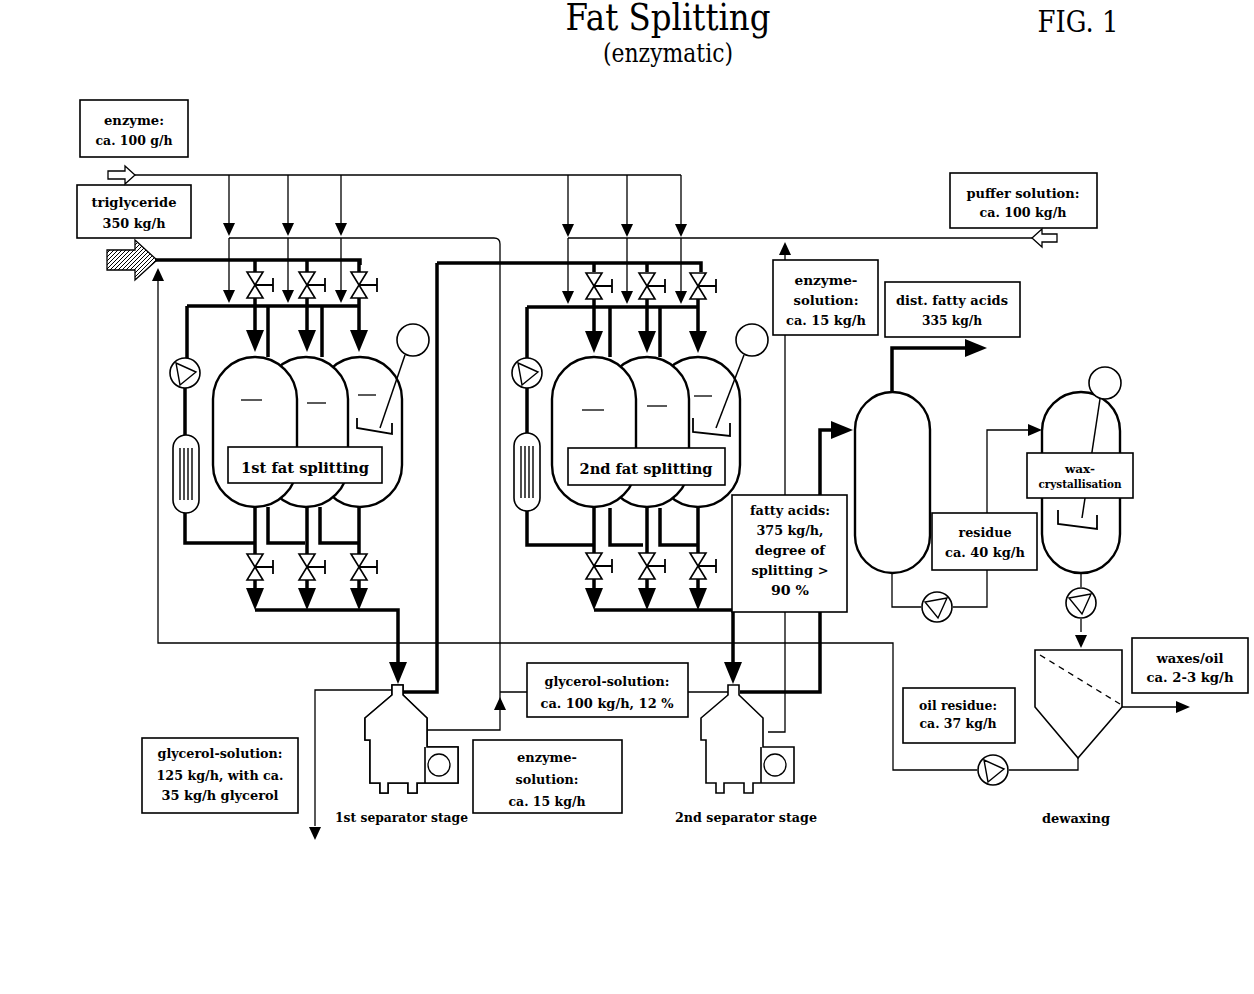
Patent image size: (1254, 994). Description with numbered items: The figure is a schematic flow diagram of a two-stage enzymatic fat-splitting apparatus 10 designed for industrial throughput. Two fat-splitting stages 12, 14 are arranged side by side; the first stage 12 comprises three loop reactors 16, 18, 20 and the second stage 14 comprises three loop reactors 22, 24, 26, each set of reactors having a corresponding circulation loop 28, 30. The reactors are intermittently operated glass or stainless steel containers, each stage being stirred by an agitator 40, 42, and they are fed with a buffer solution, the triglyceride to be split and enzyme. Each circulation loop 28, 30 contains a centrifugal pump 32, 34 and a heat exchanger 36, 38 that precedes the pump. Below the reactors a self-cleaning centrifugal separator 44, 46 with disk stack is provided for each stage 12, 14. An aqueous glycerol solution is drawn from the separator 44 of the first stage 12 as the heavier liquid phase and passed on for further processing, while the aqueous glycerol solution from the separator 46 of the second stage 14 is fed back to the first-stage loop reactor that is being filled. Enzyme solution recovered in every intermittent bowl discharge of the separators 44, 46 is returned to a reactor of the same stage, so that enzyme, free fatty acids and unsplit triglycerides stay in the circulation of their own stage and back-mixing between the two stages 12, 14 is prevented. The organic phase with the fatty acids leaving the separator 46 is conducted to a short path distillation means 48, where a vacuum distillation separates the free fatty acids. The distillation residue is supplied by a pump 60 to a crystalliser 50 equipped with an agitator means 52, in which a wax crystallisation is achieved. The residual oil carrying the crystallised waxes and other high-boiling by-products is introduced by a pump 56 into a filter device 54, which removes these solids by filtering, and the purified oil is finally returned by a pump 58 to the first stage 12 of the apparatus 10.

The two-stage fat-splitting apparatus 10 is at (762, 169).
The first fat-splitting stage 12 is at (393, 224).
The second fat-splitting stage 14 is at (716, 227).
The loop reactor 16 is at (255, 432).
The loop reactor 18 is at (306, 432).
The loop reactor 20 is at (360, 432).
The loop reactor 22 is at (594, 432).
The loop reactor 24 is at (647, 432).
The loop reactor 26 is at (698, 432).
The circulation loop 28 is at (210, 547).
The circulation loop 30 is at (552, 547).
The centrifugal pump 32 is at (196, 360).
The centrifugal pump 34 is at (538, 363).
The heat exchanger 36 is at (194, 436).
The heat exchanger 38 is at (533, 436).
The agitator 40 is at (402, 358).
The agitator 42 is at (747, 357).
The centrifugal separator 44 is at (420, 712).
The centrifugal separator 46 is at (745, 712).
The short path distillation means 48 is at (945, 401).
The crystalliser 50 is at (1132, 407).
The agitator means 52 is at (1100, 433).
The filter device 54 is at (1112, 647).
The pump 56 is at (1094, 597).
The pump 58 is at (1003, 781).
The pump 60 is at (950, 621).